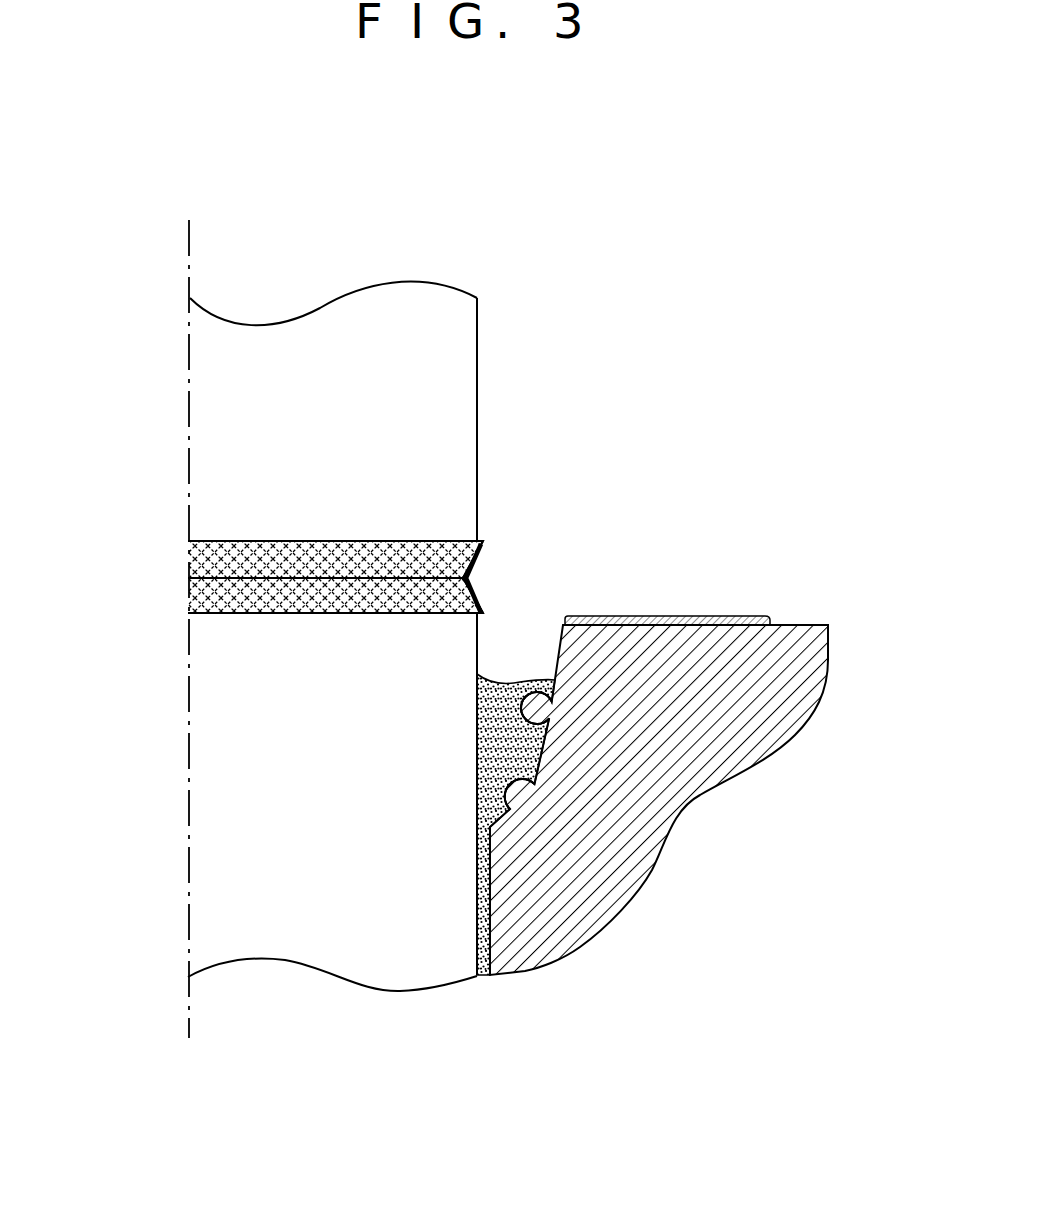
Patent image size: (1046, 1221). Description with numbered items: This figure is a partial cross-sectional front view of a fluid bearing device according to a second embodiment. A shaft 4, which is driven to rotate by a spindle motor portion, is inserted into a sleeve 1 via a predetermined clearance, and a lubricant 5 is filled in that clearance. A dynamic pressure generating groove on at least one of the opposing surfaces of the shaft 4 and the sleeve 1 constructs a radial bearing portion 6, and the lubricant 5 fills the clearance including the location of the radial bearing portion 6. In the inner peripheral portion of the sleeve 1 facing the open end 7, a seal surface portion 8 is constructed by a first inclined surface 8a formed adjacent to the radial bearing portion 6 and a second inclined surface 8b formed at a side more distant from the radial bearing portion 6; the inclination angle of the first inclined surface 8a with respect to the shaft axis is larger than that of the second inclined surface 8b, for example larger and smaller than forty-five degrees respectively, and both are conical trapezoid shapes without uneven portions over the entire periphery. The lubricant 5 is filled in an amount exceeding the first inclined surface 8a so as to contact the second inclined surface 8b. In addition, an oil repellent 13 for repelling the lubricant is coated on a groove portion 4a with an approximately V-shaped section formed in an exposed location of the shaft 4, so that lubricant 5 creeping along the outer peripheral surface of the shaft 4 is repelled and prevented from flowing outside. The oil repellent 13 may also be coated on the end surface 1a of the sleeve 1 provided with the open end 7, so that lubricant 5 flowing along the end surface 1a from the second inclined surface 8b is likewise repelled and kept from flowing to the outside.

The sleeve 1 is at (793, 675).
The end surface 1a is at (798, 625).
The shaft 4 is at (327, 356).
The groove portion 4a is at (483, 577).
The lubricant 5 is at (497, 752).
The radial bearing portion 6 is at (477, 899).
The open end 7 is at (505, 643).
The seal surface portion 8 is at (827, 821).
The first inclined surface 8a is at (540, 787).
The second inclined surface 8b is at (552, 690).
The oil repellent 13 is at (483, 550).